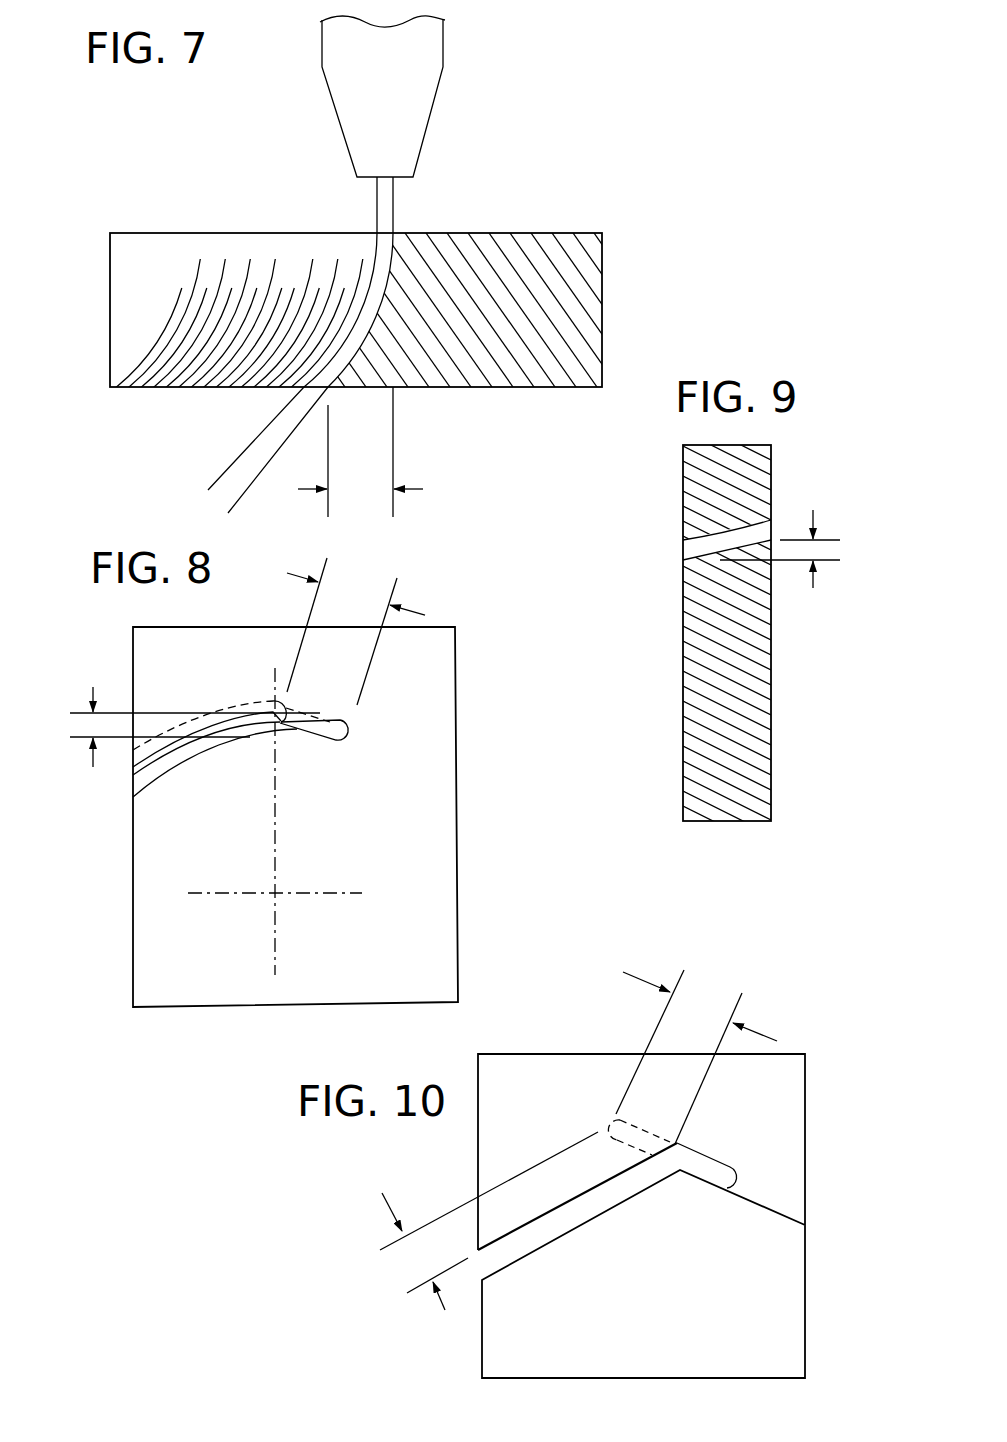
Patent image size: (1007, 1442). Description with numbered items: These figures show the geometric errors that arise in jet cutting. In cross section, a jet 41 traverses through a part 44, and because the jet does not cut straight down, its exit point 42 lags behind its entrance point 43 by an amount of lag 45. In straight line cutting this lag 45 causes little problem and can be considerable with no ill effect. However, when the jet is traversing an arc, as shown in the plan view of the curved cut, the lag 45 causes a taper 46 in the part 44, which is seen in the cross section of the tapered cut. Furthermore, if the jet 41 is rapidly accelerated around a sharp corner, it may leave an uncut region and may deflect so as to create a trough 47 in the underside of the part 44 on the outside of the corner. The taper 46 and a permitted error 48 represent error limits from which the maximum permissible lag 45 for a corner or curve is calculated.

In FIG. 7, the jet 41 is at (401, 133).
In FIG. 7, the exit point 42 is at (330, 393).
In FIG. 7, the entrance point 43 is at (397, 231).
In FIG. 7, the part 44 is at (540, 380).
In FIG. 8, the part 44 is at (440, 782).
In FIG. 9, the part 44 is at (765, 677).
In FIG. 10, the part 44 is at (805, 1327).
In FIG. 7, the lag 45 is at (418, 488).
In FIG. 8, the lag 45 is at (413, 613).
In FIG. 10, the lag 45 is at (777, 1041).
In FIG. 8, the taper 46 is at (93, 688).
In FIG. 9, the taper 46 is at (813, 510).
In FIG. 10, the trough 47 is at (612, 1125).
In FIG. 10, the permitted error 48 is at (385, 1200).